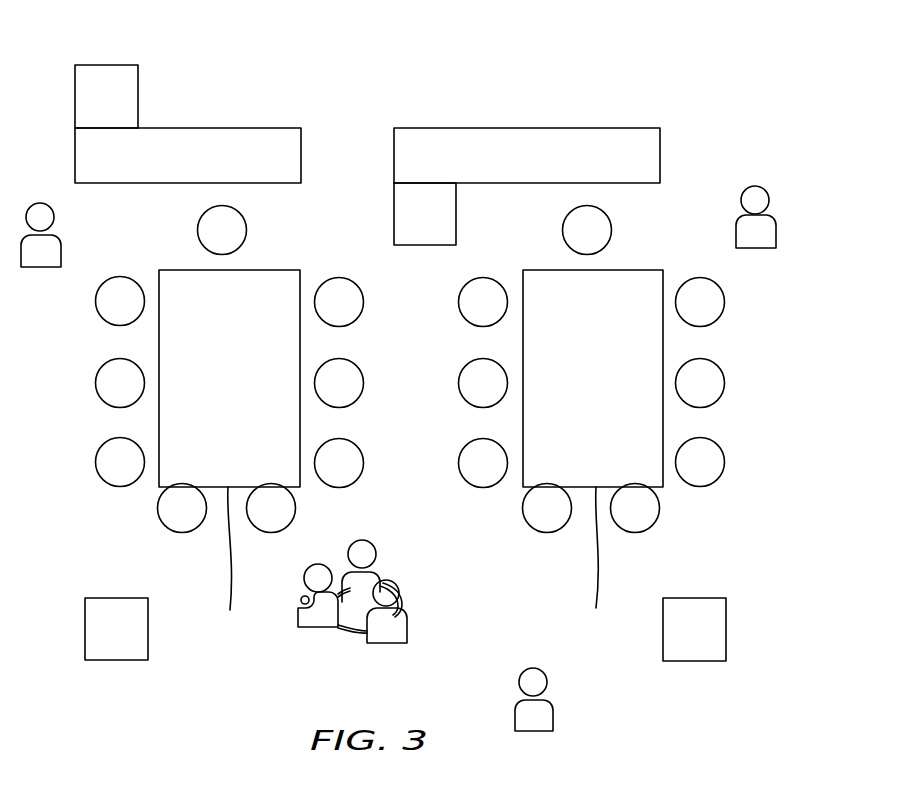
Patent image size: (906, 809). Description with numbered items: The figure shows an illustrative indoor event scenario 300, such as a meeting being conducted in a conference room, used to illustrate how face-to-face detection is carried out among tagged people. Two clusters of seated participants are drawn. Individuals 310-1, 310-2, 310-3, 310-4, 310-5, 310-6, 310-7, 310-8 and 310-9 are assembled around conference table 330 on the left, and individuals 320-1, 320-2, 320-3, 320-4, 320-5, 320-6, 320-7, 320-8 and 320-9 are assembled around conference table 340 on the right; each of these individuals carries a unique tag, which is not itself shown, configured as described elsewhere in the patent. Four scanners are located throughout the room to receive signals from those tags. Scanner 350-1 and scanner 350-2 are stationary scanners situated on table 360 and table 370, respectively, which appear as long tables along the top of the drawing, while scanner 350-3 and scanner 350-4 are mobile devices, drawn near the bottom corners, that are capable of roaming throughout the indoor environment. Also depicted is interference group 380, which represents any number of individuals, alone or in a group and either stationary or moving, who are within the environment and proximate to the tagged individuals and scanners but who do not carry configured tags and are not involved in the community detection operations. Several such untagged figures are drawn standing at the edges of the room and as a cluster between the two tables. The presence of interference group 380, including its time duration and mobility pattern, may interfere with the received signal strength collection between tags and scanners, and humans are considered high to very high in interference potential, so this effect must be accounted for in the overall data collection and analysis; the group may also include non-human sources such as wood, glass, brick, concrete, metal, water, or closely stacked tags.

The indoor event scenario 300 is at (387, 40).
The individual 310-1 is at (95, 301).
The individual 310-2 is at (95, 383).
The individual 310-3 is at (95, 466).
The individual 310-4 is at (157, 509).
The individual 310-5 is at (296, 509).
The individual 310-6 is at (361, 455).
The individual 310-7 is at (359, 367).
The individual 310-8 is at (359, 286).
The individual 310-9 is at (197, 230).
The individual 320-1 is at (485, 277).
The individual 320-2 is at (458, 385).
The individual 320-3 is at (483, 488).
The individual 320-4 is at (547, 533).
The individual 320-5 is at (660, 512).
The individual 320-6 is at (725, 463).
The individual 320-7 is at (725, 384).
The individual 320-8 is at (725, 303).
The individual 320-9 is at (612, 231).
The conference table 330 is at (229, 454).
The conference table 340 is at (593, 454).
The scanner 350-1 is at (106, 65).
The scanner 350-2 is at (394, 202).
The scanner 350-3 is at (114, 660).
The scanner 350-4 is at (696, 661).
The table 360 is at (203, 142).
The table 370 is at (500, 142).
The interference group 380 is at (40, 202).